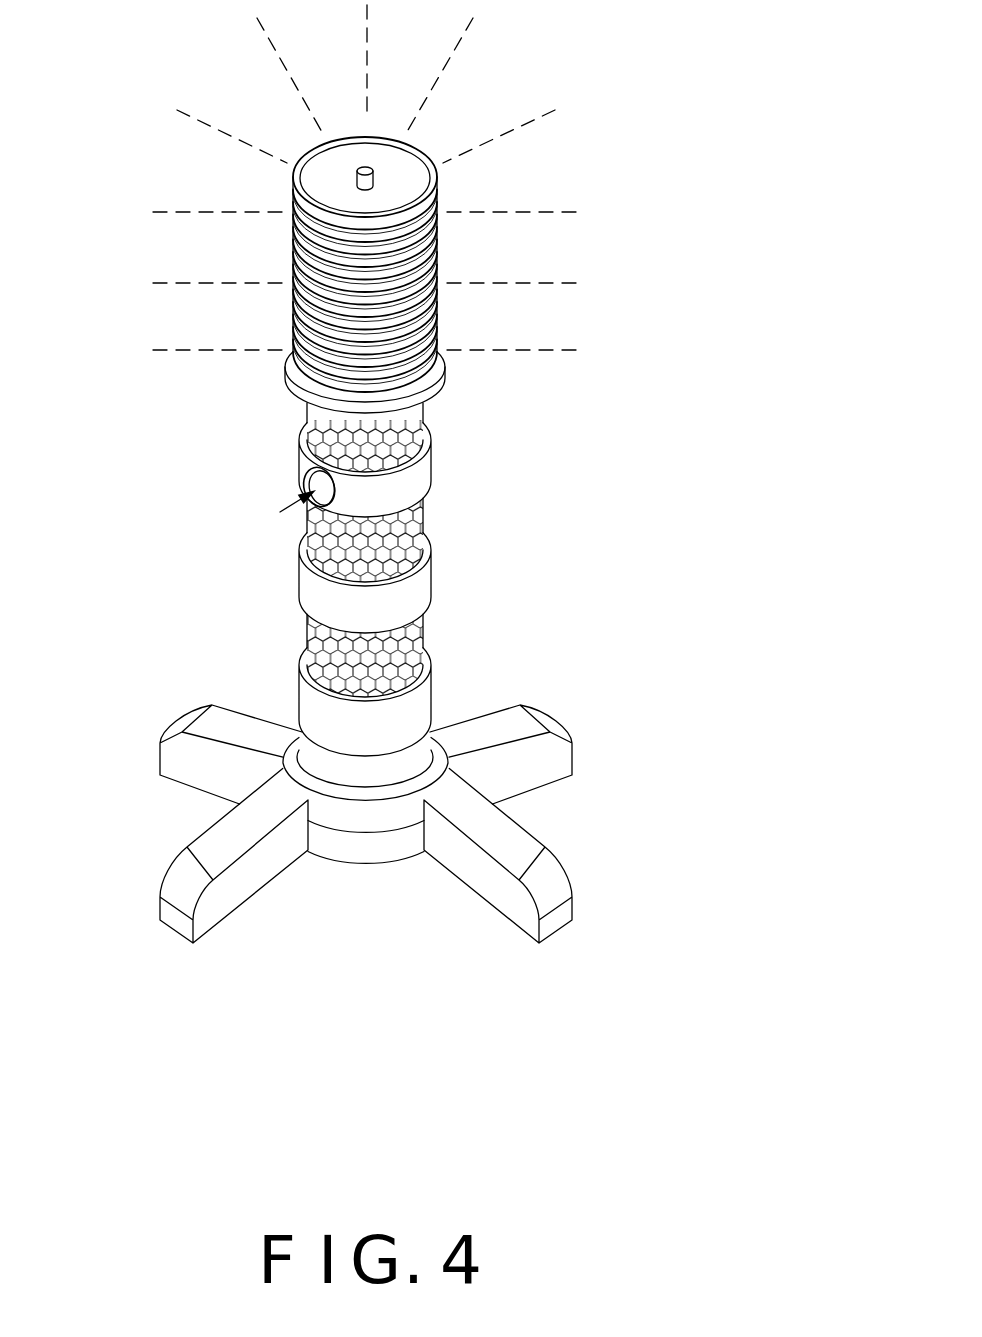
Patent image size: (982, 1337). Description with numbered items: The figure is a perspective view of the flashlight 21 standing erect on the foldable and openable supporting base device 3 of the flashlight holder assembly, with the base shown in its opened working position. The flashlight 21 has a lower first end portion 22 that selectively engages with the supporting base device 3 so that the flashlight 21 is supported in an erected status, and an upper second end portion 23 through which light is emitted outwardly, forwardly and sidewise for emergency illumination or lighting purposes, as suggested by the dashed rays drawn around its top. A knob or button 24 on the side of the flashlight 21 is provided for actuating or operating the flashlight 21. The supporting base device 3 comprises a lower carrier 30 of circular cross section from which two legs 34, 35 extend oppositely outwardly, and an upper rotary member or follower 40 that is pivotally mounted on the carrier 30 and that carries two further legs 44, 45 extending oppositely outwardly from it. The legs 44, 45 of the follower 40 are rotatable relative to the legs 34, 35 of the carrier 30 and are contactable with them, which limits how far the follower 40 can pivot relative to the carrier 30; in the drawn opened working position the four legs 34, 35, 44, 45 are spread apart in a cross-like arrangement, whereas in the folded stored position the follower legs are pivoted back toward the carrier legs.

The supporting base device 3 is at (392, 503).
The flashlight 21 is at (418, 593).
The first end portion 22 is at (395, 760).
The second end portion 23 is at (430, 208).
The knob 24 is at (312, 478).
The carrier 30 is at (376, 809).
The leg 34 is at (233, 722).
The leg 35 is at (553, 882).
The follower 40 is at (345, 814).
The leg 44 is at (513, 728).
The leg 45 is at (178, 880).